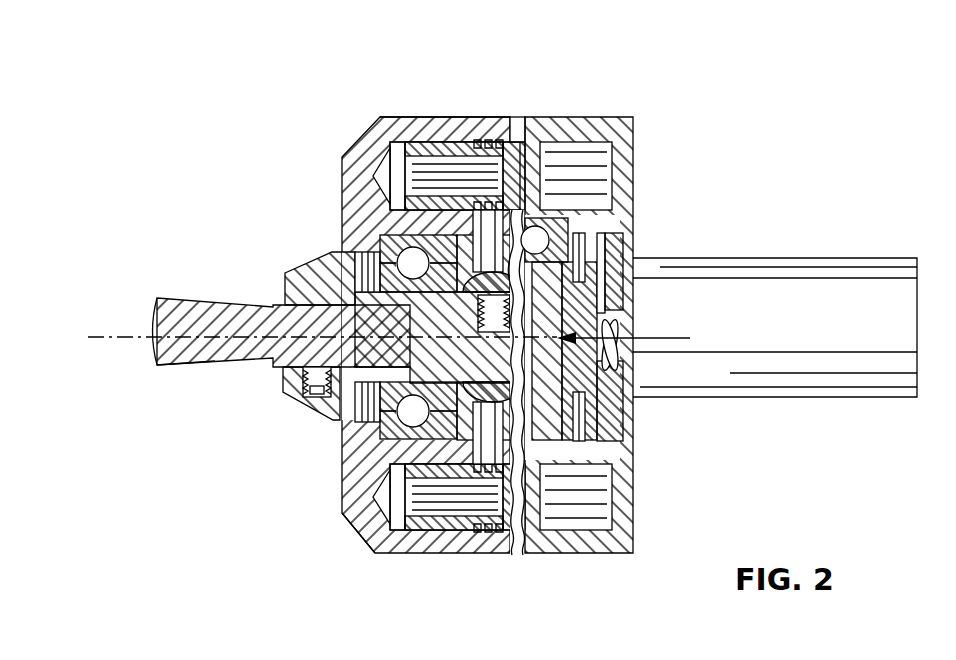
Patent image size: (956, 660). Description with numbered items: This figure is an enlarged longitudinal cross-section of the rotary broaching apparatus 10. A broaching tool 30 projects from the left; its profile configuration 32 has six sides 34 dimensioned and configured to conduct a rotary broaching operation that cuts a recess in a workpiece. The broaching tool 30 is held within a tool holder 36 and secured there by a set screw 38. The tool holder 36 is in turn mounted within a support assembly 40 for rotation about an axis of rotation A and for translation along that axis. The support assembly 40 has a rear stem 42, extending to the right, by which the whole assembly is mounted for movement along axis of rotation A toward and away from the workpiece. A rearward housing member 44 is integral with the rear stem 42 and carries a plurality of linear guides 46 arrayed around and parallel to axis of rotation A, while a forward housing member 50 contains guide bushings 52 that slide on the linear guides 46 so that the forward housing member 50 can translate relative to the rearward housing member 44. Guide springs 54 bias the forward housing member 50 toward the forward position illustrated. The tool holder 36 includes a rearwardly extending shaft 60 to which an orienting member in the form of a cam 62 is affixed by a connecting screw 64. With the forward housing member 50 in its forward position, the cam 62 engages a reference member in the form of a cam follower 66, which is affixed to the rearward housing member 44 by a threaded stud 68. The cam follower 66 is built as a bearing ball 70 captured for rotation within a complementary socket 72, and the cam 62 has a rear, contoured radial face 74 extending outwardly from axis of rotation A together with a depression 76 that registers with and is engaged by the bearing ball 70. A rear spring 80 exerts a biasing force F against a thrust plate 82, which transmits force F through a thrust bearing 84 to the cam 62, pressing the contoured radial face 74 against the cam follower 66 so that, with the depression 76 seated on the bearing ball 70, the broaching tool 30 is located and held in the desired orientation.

The apparatus 10 is at (355, 130).
The broaching tool 30 is at (201, 298).
The profile configuration 32 is at (157, 330).
The sides 34 is at (153, 350).
The tool holder 36 is at (302, 263).
The set screw 38 is at (293, 377).
The support assembly 40 is at (335, 477).
The rear stem 42 is at (862, 267).
The rearward housing member 44 is at (613, 540).
The linear guides 46 is at (441, 160).
The forward housing member 50 is at (347, 512).
The guide bushings 52 is at (421, 138).
The guide springs 54 is at (483, 157).
The shaft 60 is at (486, 522).
The cam 62 is at (552, 456).
The connecting screw 64 is at (622, 287).
The cam follower 66 is at (537, 228).
The threaded stud 68 is at (488, 230).
The bearing ball 70 is at (533, 257).
The socket 72 is at (503, 312).
The contoured radial face 74 is at (517, 556).
The depression 76 is at (618, 233).
The rear spring 80 is at (640, 347).
The thrust plate 82 is at (622, 298).
The thrust bearing 84 is at (622, 422).
The axis of rotation A is at (243, 338).
The biasing force F is at (645, 338).